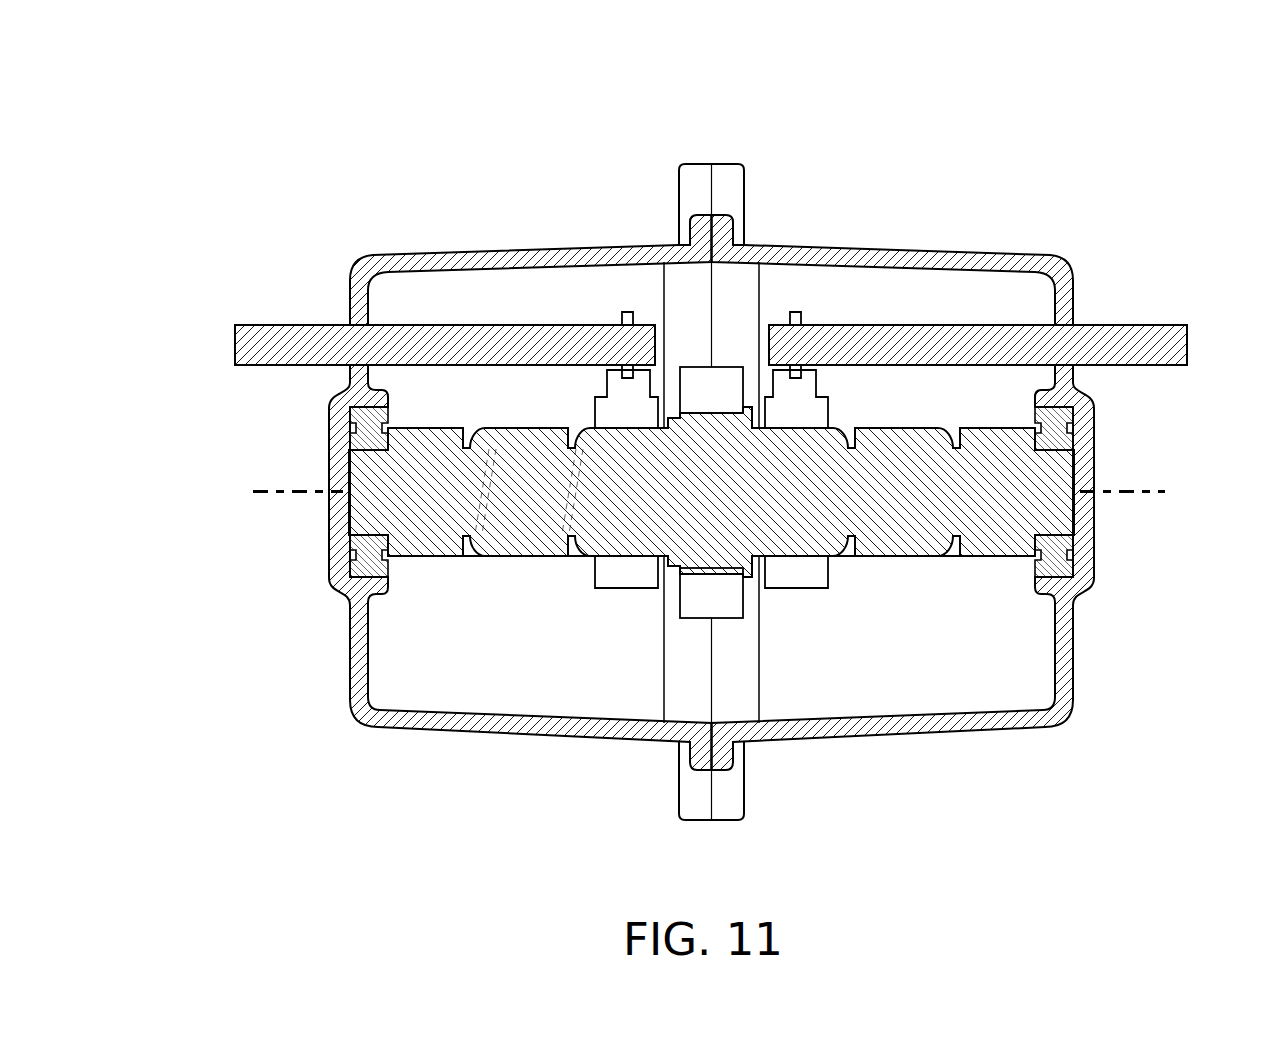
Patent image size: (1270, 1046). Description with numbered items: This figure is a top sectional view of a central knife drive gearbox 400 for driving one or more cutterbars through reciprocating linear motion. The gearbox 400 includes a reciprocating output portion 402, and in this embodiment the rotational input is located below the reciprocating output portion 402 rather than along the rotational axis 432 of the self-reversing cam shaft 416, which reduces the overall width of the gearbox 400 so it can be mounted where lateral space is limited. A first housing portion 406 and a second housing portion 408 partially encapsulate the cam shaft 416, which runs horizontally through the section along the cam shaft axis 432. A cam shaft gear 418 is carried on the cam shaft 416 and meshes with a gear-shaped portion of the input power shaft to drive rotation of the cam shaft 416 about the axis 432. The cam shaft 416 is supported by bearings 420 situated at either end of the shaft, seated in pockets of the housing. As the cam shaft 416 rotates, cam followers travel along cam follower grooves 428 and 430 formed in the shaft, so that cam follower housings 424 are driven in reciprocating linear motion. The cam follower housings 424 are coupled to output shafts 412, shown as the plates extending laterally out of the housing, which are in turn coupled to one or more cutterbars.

The central knife drive gearbox 400 is at (205, 118).
The reciprocating output portion 402 is at (455, 855).
The first housing portion 406 is at (440, 255).
The second housing portion 408 is at (960, 250).
The output shaft 412 is at (290, 325).
The self-reversing cam shaft 416 is at (990, 430).
The cam shaft gear 418 is at (680, 600).
The bearing 420 is at (345, 596).
The cam follower housing 424 is at (605, 385).
The cam follower groove 428 is at (470, 557).
The cam follower groove 430 is at (845, 557).
The cam shaft axis 432 is at (307, 492).